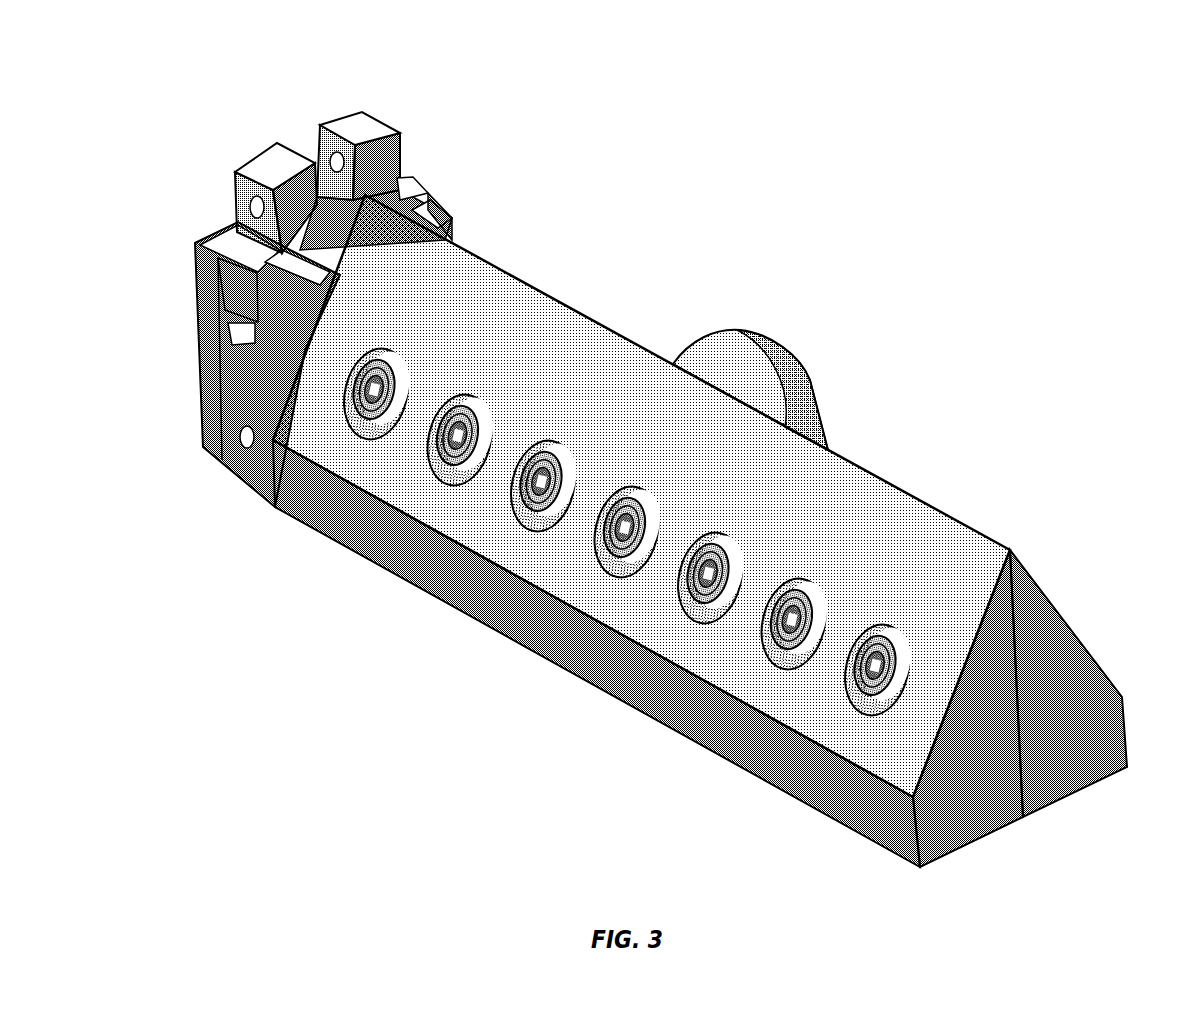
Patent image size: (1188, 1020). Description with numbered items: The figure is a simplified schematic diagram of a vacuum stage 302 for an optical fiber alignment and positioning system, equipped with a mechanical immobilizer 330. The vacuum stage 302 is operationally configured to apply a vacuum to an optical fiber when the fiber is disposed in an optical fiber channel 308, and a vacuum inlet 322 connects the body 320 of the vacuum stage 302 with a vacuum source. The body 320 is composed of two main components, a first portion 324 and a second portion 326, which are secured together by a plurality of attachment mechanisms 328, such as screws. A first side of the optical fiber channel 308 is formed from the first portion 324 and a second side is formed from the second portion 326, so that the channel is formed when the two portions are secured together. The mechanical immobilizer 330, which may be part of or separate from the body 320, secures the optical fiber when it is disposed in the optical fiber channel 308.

The vacuum stage 302 is at (1100, 65).
The optical fiber channel 308 is at (915, 488).
The body 320 is at (307, 487).
The vacuum inlet 322 is at (768, 338).
The first portion 324 is at (1058, 653).
The second portion 326 is at (945, 805).
The attachment mechanisms 328 is at (617, 520).
The mechanical immobilizer 330 is at (252, 165).